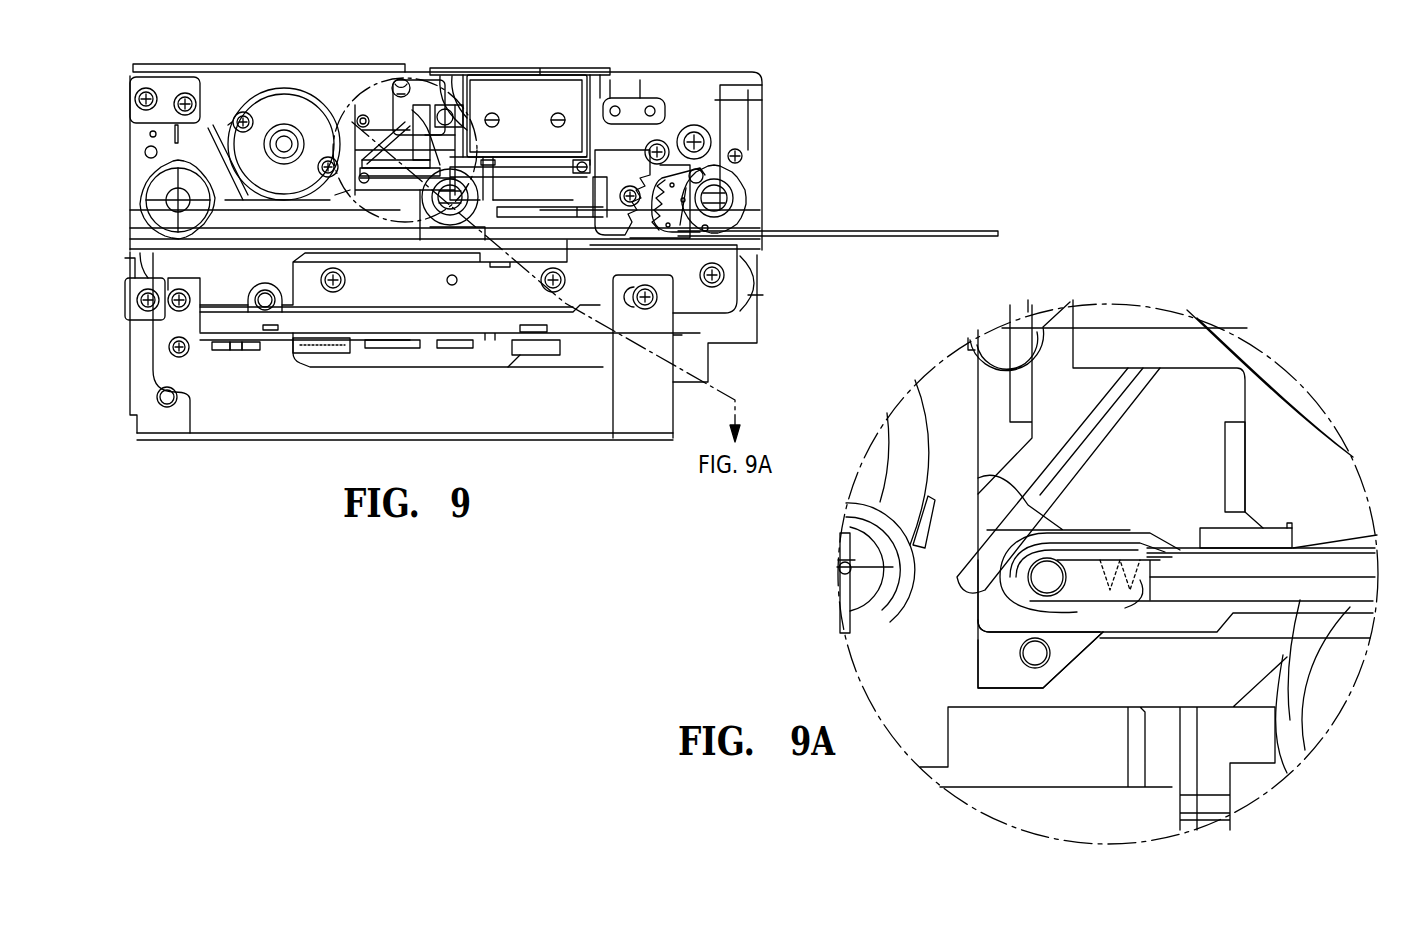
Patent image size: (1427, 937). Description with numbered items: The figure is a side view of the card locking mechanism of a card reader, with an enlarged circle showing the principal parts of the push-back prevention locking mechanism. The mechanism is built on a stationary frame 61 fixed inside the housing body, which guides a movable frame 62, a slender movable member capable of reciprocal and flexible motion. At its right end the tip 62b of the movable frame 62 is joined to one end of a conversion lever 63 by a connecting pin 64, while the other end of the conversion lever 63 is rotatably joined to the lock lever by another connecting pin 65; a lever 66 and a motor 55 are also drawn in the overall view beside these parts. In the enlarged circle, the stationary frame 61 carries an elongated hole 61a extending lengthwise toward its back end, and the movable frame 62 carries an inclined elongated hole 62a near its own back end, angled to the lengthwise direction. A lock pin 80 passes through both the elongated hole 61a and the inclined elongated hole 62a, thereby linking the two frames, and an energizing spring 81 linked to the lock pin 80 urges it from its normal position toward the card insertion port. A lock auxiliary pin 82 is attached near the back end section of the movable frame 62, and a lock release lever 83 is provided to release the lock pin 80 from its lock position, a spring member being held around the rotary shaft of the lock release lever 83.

In FIG. 9, the motor 55 is at (493, 98).
In FIG. 9A, the stationary frame 61 is at (990, 598).
In FIG. 9, the elongated hole 61a is at (422, 122).
In FIG. 9A, the elongated hole 61a is at (1340, 655).
In FIG. 9, the movable frame 62 is at (507, 170).
In FIG. 9A, the movable frame 62 is at (995, 653).
In FIG. 9, the inclined elongated hole 62a is at (372, 162).
In FIG. 9A, the inclined elongated hole 62a is at (1133, 603).
In FIG. 9, the tip 62b is at (562, 140).
In FIG. 9, the conversion lever 63 is at (640, 297).
In FIG. 9, the connecting pin 64 is at (602, 285).
In FIG. 9, the connecting pin 65 is at (710, 186).
In FIG. 9, the lever 66 is at (728, 213).
In FIG. 9, the lock pin 80 is at (362, 117).
In FIG. 9A, the lock pin 80 is at (1055, 580).
In FIG. 9A, the energizing spring 81 is at (1140, 528).
In FIG. 9A, the lock auxiliary pin 82 is at (1033, 656).
In FIG. 9A, the lock release lever 83 is at (1118, 408).